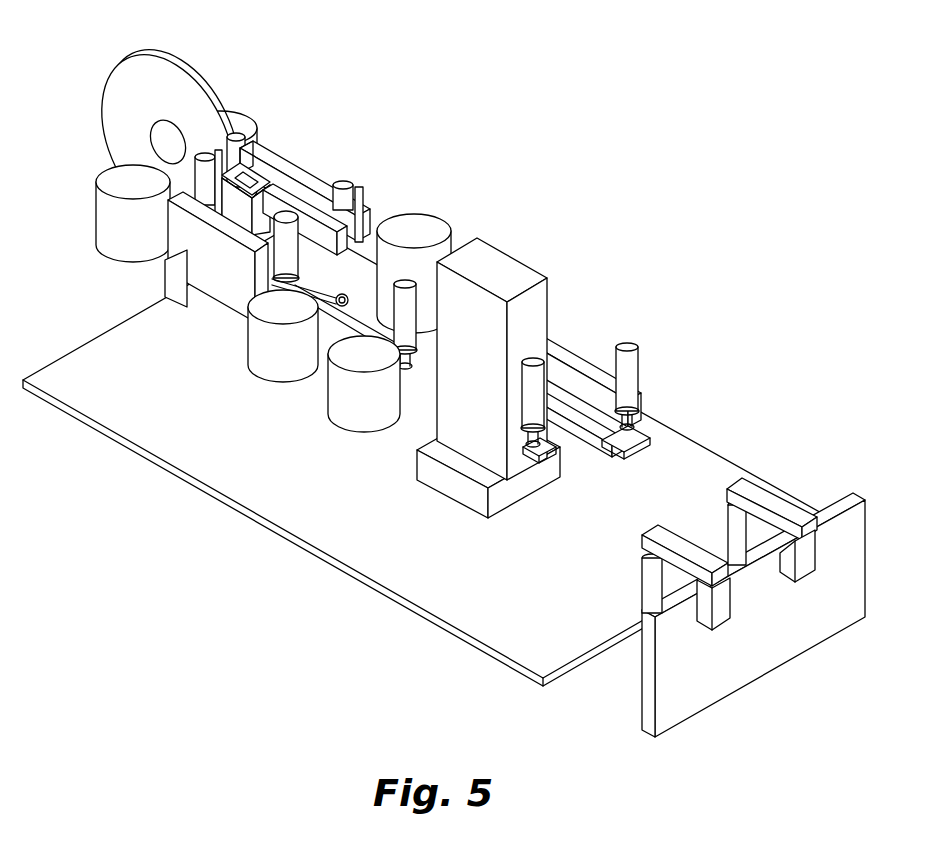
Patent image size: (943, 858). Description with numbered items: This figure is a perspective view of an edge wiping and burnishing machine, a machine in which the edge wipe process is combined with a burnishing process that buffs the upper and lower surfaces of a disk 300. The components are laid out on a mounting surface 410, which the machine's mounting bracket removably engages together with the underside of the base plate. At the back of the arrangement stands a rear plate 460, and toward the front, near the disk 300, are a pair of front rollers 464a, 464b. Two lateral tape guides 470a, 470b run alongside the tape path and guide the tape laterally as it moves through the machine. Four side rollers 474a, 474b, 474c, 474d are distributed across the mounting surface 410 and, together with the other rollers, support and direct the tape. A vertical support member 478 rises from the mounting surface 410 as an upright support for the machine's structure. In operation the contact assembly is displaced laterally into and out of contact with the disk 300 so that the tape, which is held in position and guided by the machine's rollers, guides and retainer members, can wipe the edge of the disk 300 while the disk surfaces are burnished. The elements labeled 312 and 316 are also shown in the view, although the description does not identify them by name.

The disk 300 is at (152, 55).
The sensor block 312 is at (262, 178).
The support arm 316 is at (255, 160).
The mounting surface 410 is at (242, 512).
The rear plate 460 is at (760, 678).
The front roller 464a is at (228, 132).
The front roller 464b is at (98, 247).
The lateral tape guide 470a is at (297, 172).
The lateral tape guide 470b is at (190, 253).
The side roller 474a is at (457, 195).
The side roller 474b is at (577, 248).
The side roller 474c is at (250, 360).
The side roller 474d is at (332, 403).
The vertical support member 478 is at (543, 320).